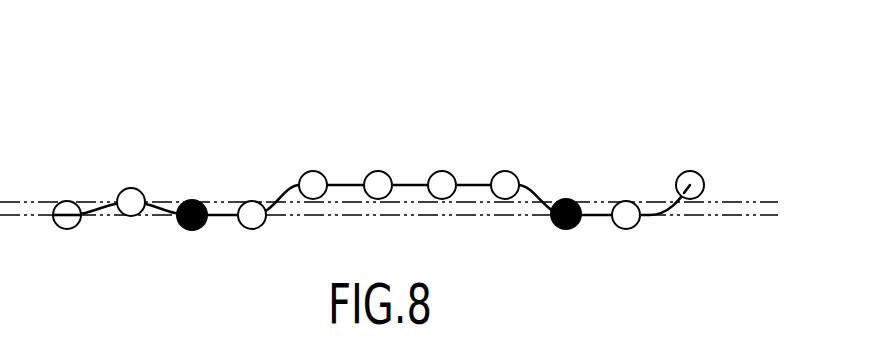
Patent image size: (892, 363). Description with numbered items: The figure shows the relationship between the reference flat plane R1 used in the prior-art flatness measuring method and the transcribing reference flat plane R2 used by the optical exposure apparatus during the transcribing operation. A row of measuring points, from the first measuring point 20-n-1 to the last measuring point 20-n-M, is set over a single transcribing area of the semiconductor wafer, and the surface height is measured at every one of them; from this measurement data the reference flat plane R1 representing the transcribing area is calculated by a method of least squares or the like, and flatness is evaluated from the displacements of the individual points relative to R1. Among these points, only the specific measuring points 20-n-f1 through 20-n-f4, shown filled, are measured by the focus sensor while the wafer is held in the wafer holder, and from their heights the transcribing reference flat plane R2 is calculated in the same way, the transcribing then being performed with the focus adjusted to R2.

The measuring point 20-n-1 is at (102, 165).
The specific measuring point 20-n-f1 is at (192, 201).
The specific measuring point 20-n-f4 is at (571, 200).
The measuring point 20-n-M is at (690, 171).
The reference flat plane R1 is at (737, 197).
The transcribing reference flat plane R2 is at (737, 217).